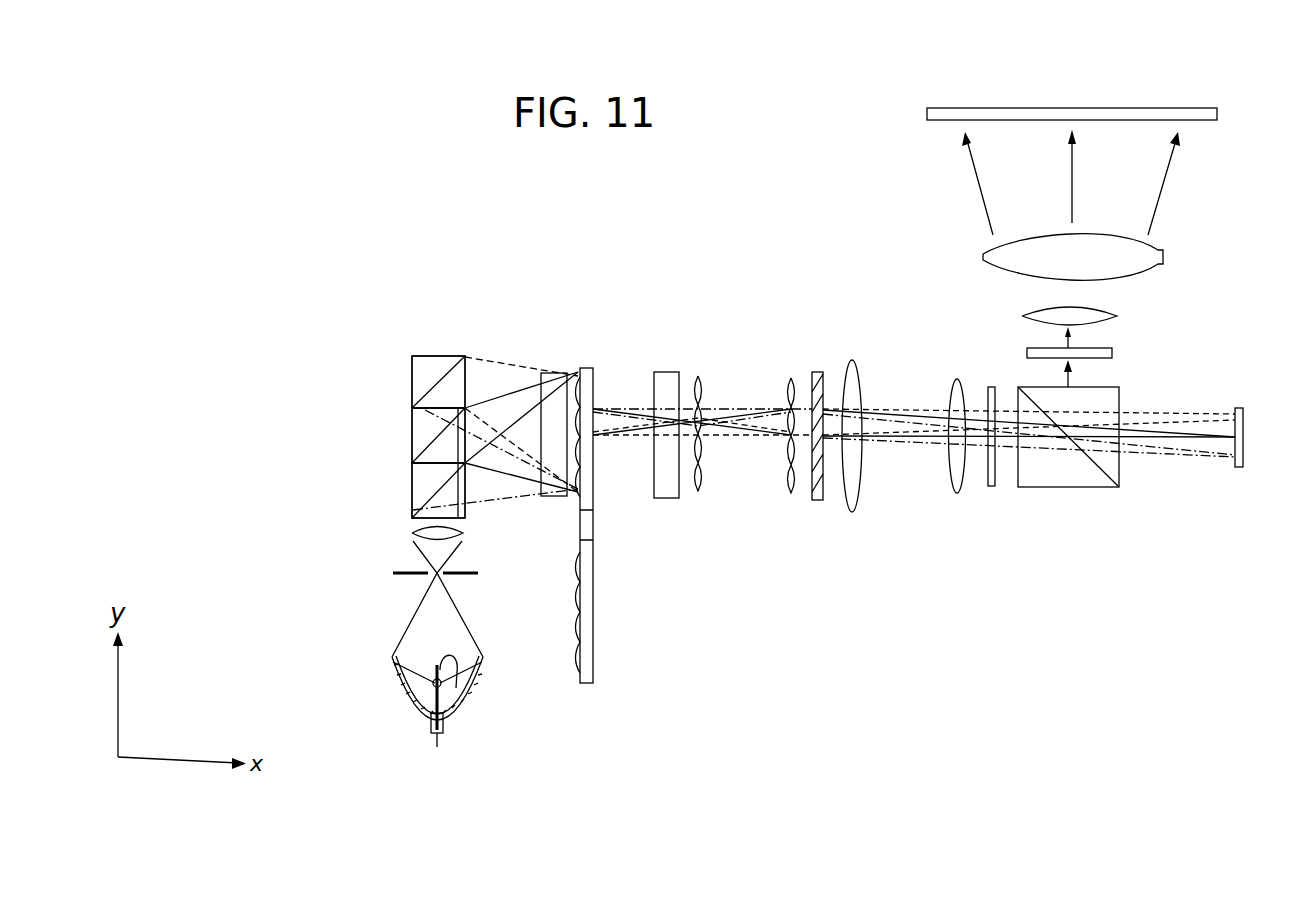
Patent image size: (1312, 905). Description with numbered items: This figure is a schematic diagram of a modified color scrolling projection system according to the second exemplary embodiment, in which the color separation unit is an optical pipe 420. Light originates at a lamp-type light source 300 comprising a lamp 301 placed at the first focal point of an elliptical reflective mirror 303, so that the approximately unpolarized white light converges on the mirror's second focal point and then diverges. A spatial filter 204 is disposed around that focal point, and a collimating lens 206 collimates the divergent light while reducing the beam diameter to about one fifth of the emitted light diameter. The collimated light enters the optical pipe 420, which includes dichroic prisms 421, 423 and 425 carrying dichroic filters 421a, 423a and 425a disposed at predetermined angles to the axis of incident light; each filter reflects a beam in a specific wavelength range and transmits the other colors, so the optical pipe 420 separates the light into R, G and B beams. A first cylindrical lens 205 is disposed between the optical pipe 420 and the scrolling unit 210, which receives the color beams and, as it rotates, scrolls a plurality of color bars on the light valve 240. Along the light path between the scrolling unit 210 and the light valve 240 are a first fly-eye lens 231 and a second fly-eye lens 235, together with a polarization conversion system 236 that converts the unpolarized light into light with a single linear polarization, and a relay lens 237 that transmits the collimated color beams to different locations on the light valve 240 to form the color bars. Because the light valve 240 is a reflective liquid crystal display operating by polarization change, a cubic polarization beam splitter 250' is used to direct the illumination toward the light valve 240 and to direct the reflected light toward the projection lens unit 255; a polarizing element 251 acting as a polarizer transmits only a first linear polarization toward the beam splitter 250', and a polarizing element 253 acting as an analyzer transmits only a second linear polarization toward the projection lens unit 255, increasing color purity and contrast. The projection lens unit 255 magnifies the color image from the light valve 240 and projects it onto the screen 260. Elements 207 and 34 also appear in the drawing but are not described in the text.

The optical pipe 420 is at (401, 408).
The dichroic prism 425 is at (412, 372).
The dichroic filter 425a is at (423, 395).
The dichroic prism 423 is at (412, 427).
The dichroic filter 423a is at (427, 443).
The dichroic prism 421 is at (412, 482).
The dichroic filter 421a is at (427, 502).
The collimating lens 206 is at (412, 533).
The spatial filter 204 is at (393, 573).
The light source 300 is at (411, 701).
The lamp 301 is at (432, 688).
The reflective mirror 303 is at (472, 697).
The first cylindrical lens 205 is at (557, 373).
The scrolling unit 210 is at (588, 362).
The glass rod / light guide 207 is at (666, 372).
The fly-eye lens array 34 is at (712, 435).
The first fly-eye lens 231 is at (699, 491).
The second fly-eye lens 235 is at (791, 493).
The polarization conversion system 236 is at (818, 500).
The relay lens 237 is at (955, 487).
The polarizing element 251 is at (991, 486).
The cubic polarization beam splitter 250' is at (1068, 456).
The polarizing element 253 is at (1112, 353).
The projection lens unit 255 is at (968, 242).
The light valve 240 is at (1240, 408).
The screen 260 is at (1217, 118).